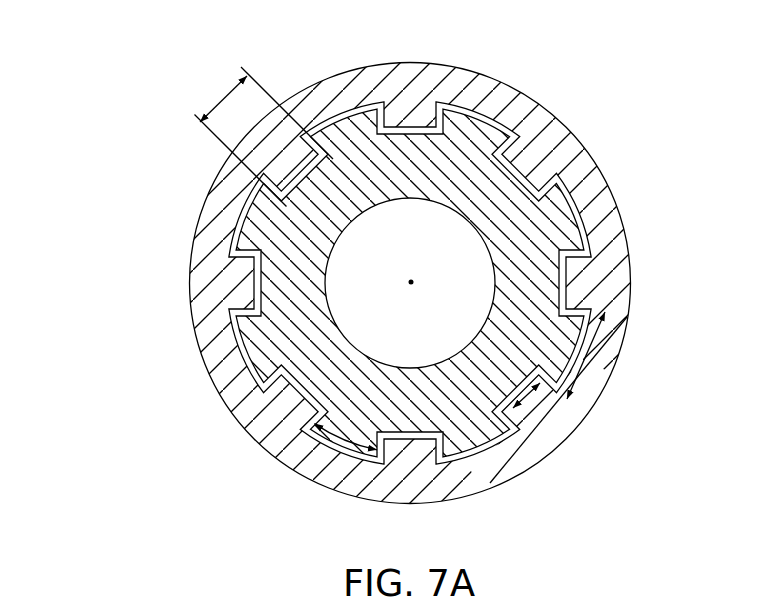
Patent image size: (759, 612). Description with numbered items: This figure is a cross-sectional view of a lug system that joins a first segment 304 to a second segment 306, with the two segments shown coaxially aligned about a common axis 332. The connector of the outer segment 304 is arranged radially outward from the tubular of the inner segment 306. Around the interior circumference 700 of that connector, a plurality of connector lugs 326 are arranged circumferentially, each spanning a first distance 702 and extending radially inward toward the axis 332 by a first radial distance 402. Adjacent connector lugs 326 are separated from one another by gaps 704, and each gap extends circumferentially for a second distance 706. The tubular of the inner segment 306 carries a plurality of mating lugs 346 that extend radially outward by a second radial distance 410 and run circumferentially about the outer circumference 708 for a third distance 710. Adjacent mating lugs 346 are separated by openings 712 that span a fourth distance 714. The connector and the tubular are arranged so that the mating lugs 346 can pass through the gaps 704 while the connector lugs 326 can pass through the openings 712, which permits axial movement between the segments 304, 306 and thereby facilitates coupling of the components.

The segment 304 is at (589, 125).
The segment 306 is at (316, 237).
The connector lugs 326 is at (243, 223).
The axis 332 is at (414, 286).
The mating lugs 346 is at (541, 171).
The first radial distance 402 is at (600, 283).
The second radial distance 410 is at (580, 212).
The interior circumference 700 is at (338, 104).
The first distance 702 is at (345, 444).
The gaps 704 is at (542, 228).
The second distance 706 is at (220, 95).
The outer circumference 708 is at (483, 462).
The third distance 710 is at (532, 396).
The openings 712 is at (342, 458).
The fourth distance 714 is at (584, 378).